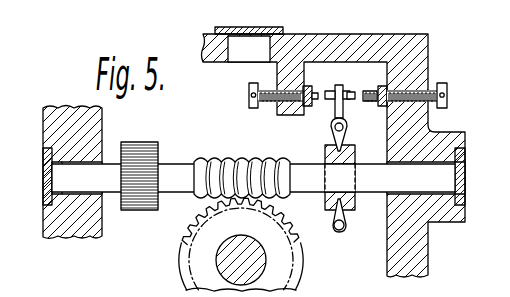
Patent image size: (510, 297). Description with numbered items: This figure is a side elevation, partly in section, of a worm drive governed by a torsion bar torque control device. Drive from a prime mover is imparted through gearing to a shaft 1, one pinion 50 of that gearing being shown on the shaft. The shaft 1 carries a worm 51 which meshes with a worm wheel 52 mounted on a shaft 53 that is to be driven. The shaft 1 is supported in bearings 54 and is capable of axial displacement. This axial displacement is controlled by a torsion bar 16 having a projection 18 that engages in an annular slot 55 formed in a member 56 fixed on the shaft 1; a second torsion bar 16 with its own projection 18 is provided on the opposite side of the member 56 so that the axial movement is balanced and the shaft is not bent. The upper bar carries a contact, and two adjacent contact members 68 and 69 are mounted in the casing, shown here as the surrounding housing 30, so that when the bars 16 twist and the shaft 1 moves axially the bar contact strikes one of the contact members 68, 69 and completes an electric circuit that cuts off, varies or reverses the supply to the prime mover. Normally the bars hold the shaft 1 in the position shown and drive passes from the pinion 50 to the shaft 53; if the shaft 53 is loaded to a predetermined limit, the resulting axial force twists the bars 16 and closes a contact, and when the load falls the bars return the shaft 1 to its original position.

The shaft 1 is at (185, 190).
The torsion bar 16 is at (334, 127).
The projection 18 is at (344, 221).
The housing 30 is at (405, 50).
The pinion 50 is at (136, 212).
The worm 51 is at (230, 160).
The worm wheel 52 is at (184, 262).
The shaft to be driven 53 is at (255, 262).
The bearings 54 is at (68, 163).
The annular slot 55 is at (330, 210).
The member 56 is at (325, 160).
The contact member 68 is at (334, 92).
The contact member 69 is at (351, 93).